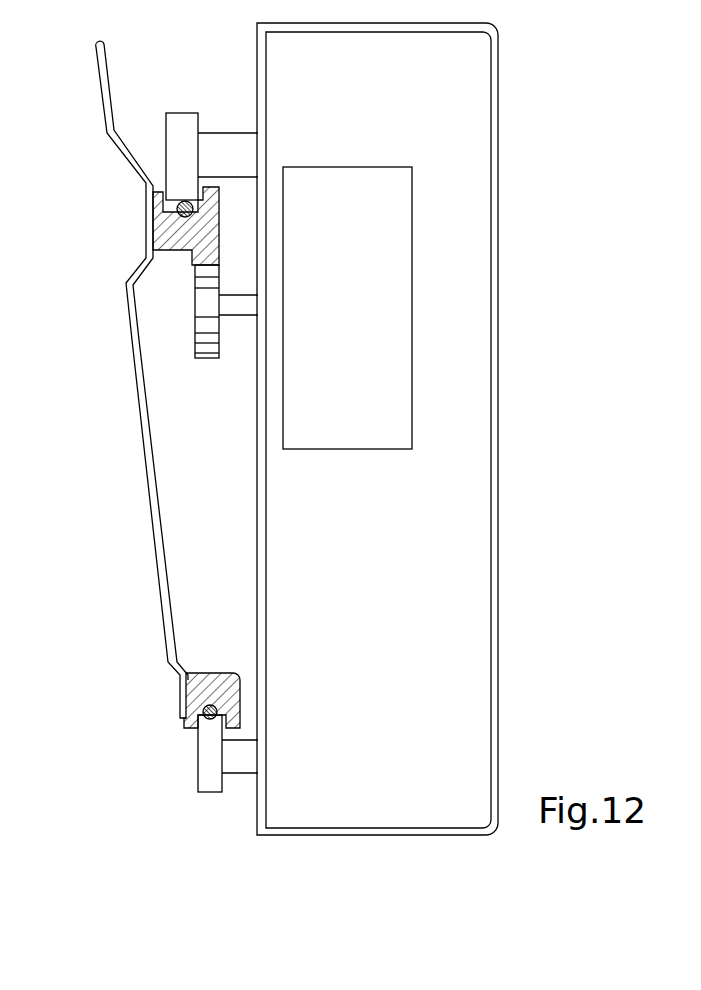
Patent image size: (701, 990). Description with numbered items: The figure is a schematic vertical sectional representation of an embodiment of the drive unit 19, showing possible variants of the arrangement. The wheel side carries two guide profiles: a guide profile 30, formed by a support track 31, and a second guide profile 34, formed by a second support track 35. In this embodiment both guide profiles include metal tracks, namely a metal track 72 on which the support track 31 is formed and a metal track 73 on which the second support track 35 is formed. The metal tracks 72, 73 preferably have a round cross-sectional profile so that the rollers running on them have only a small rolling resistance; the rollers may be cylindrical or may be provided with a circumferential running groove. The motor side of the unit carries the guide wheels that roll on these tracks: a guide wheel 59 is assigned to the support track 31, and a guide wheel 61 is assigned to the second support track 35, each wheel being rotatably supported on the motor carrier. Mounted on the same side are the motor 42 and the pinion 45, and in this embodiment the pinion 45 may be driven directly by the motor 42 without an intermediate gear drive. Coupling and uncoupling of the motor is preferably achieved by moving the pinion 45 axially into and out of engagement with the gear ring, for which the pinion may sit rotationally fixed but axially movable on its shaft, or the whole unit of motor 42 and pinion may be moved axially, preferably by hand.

The drive unit 19 is at (569, 95).
The motor 42 is at (373, 313).
The guide wheel 59 is at (182, 120).
The metal track 72 is at (183, 214).
The support track 31 is at (178, 206).
The guide profile 30 is at (168, 262).
The pinion 45 is at (205, 364).
The second guide profile 34 is at (194, 648).
The second support track 35 is at (203, 718).
The metal track 73 is at (204, 708).
The guide wheel 61 is at (211, 765).